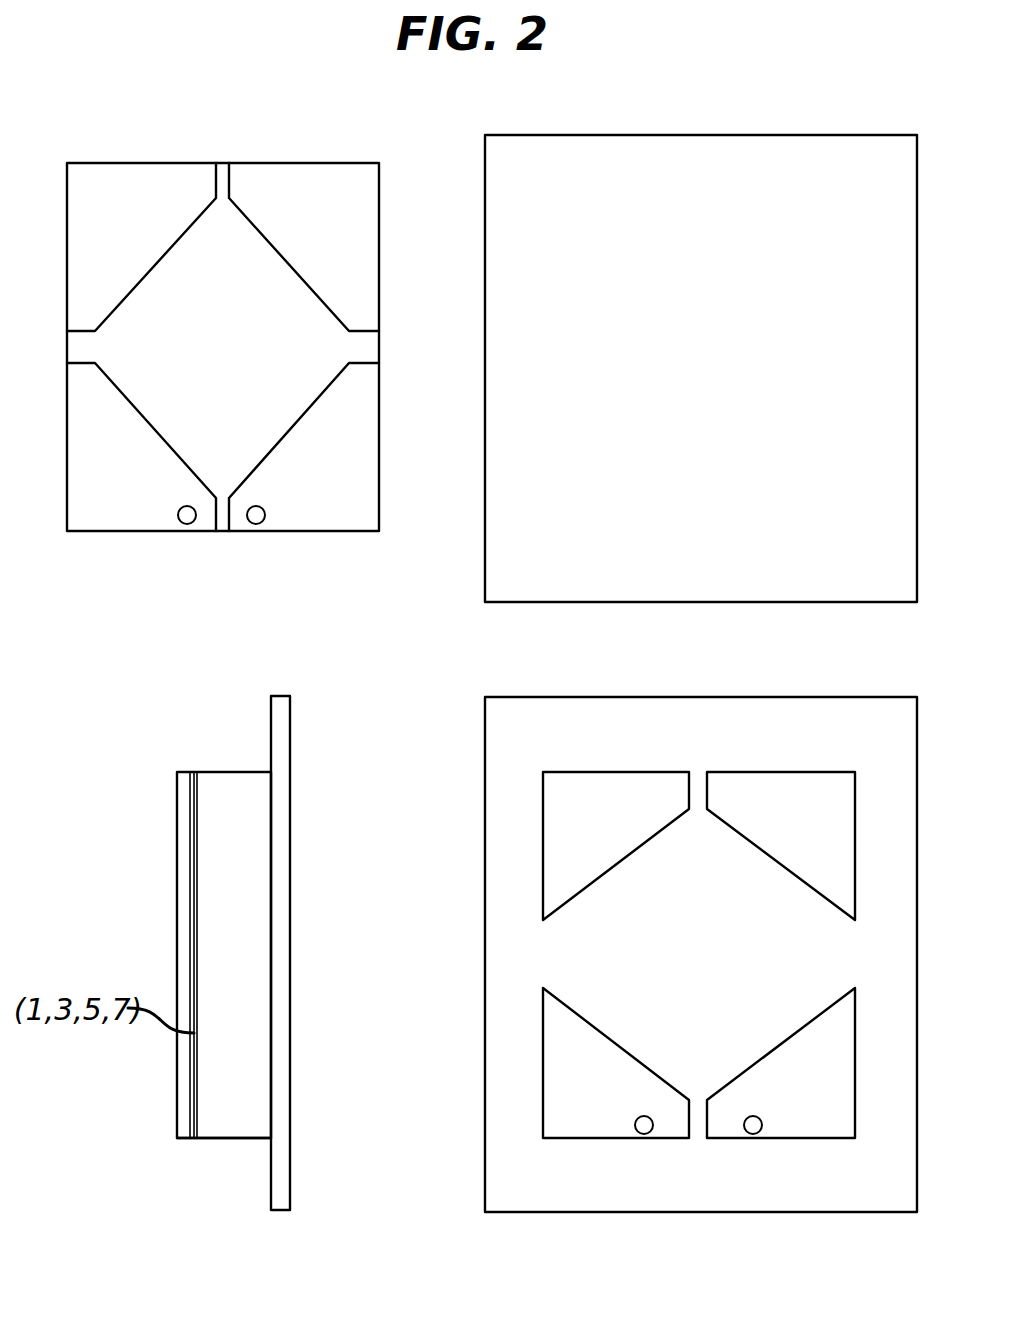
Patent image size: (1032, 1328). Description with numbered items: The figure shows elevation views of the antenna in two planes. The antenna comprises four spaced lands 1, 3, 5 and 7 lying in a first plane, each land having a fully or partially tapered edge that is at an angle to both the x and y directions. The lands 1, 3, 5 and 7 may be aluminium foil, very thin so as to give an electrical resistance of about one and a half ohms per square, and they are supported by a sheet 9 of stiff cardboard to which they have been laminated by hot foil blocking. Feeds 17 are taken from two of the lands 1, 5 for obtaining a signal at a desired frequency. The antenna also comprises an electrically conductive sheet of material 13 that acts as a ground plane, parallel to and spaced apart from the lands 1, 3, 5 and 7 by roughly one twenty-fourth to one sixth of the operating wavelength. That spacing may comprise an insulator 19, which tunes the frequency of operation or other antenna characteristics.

The land 1 is at (121, 198).
The land 3 is at (297, 198).
The land 5 is at (124, 505).
The land 7 is at (300, 505).
The sheet 9 is at (530, 1212).
The electrically conductive sheet of material 13 is at (698, 143).
The feeds 17 is at (189, 522).
The insulator 19 is at (237, 1140).